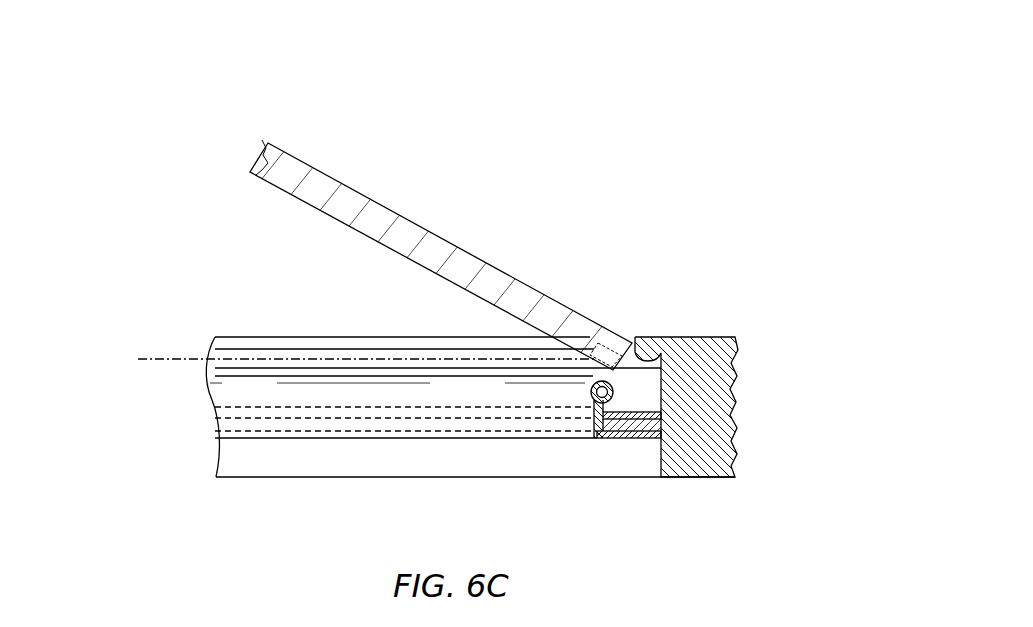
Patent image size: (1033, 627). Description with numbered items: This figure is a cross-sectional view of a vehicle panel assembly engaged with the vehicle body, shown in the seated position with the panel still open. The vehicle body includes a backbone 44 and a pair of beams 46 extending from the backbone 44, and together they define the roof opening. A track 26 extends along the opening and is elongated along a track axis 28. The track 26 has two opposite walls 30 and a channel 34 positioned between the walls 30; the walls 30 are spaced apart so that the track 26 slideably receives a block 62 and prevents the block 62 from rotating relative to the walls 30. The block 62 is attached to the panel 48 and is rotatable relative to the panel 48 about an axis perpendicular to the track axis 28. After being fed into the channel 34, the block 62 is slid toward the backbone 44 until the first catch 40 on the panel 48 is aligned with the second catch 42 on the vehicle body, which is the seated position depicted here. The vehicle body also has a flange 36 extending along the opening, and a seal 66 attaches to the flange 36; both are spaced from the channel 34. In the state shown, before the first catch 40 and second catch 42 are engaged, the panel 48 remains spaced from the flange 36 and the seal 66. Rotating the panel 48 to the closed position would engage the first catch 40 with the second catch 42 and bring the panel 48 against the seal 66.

The track 26 is at (107, 353).
The track axis 28 is at (148, 360).
The walls 30 is at (213, 342).
The channel 34 is at (270, 353).
The flange 36 is at (620, 430).
The first catch 40 is at (610, 350).
The second catch 42 is at (662, 356).
The backbone 44 is at (690, 478).
The beams 46 is at (310, 478).
The panel 48 is at (340, 182).
The block 62 is at (595, 350).
The seal 66 is at (613, 392).